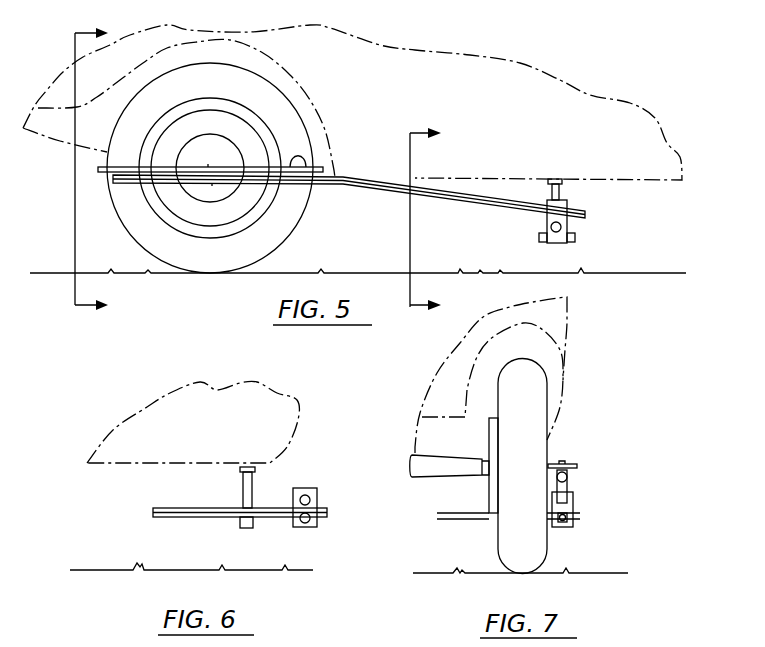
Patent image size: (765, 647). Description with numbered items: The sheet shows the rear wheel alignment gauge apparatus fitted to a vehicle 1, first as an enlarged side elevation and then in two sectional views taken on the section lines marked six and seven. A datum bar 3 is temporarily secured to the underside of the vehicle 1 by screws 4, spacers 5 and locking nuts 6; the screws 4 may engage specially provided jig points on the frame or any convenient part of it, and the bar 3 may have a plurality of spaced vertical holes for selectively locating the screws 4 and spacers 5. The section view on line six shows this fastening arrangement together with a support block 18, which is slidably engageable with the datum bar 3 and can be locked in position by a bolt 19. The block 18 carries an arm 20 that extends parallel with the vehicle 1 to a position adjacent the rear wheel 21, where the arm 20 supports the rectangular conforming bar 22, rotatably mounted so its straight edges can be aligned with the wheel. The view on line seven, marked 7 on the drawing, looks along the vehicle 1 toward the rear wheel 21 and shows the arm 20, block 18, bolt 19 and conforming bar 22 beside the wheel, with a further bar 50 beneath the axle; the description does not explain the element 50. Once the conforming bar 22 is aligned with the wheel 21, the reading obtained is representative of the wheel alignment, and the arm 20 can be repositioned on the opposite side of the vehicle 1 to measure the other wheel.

In FIG. 5, the vehicle 1 is at (413, 68).
In FIG. 6, the vehicle 1 is at (228, 420).
In FIG. 7, the vehicle 1 is at (547, 350).
In FIG. 6, the datum bar 3 is at (198, 514).
In FIG. 6, the screws 4 is at (242, 528).
In FIG. 6, the spacers 5 is at (243, 485).
In FIG. 5, the locking nuts 6 is at (425, 219).
In FIG. 6, the locking nuts 6 is at (259, 470).
In FIG. 5, the section line 7- 7 is at (91, 173).
In FIG. 5, the support block 18 is at (568, 210).
In FIG. 6, the support block 18 is at (311, 507).
In FIG. 7, the support block 18 is at (574, 510).
In FIG. 5, the bolt 19 is at (574, 238).
In FIG. 6, the bolt 19 is at (298, 528).
In FIG. 7, the bolt 19 is at (562, 531).
In FIG. 5, the arm 20 is at (487, 205).
In FIG. 7, the arm 20 is at (568, 487).
In FIG. 5, the rear wheel 21 is at (137, 222).
In FIG. 7, the rear wheel 21 is at (533, 400).
In FIG. 5, the conforming bar 22 is at (313, 188).
In FIG. 7, the conforming bar 22 is at (575, 463).
In FIG. 7, the axle bar 50 is at (475, 518).